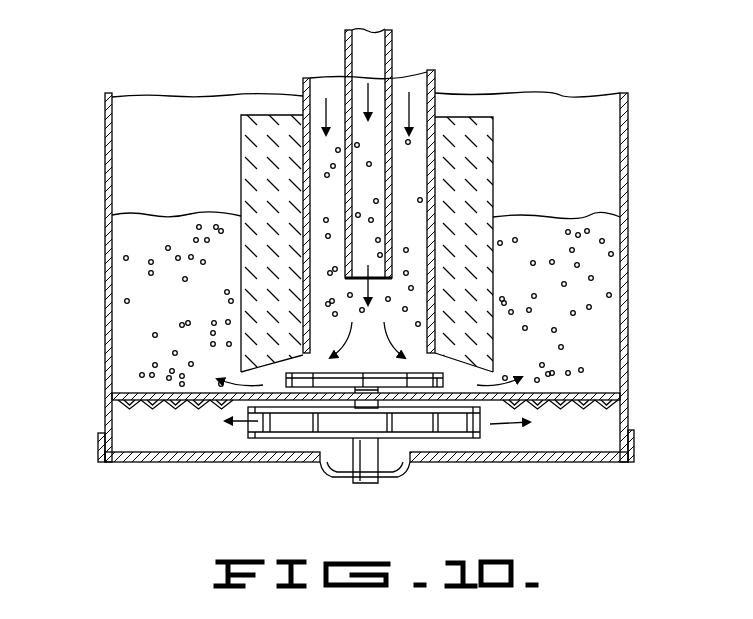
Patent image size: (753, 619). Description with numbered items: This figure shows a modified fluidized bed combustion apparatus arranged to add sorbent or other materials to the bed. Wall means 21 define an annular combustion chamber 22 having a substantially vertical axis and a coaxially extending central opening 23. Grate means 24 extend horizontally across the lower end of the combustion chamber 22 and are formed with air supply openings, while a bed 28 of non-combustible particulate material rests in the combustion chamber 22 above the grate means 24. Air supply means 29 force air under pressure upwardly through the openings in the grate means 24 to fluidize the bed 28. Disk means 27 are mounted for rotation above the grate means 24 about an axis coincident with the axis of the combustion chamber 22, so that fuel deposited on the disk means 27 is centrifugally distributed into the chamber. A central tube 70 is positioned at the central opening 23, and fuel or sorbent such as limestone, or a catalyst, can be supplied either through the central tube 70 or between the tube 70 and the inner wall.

The wall means 21 is at (103, 181).
The annular combustion chamber 22 is at (202, 125).
The central opening 23 is at (413, 298).
The grate means 24 is at (148, 395).
The disk means 27 is at (447, 370).
The bed 28 is at (617, 272).
The air supply means 29 is at (447, 438).
The central tube 70 is at (393, 47).